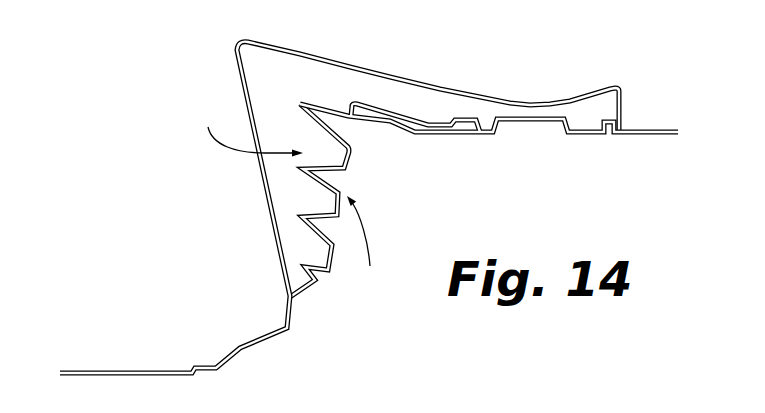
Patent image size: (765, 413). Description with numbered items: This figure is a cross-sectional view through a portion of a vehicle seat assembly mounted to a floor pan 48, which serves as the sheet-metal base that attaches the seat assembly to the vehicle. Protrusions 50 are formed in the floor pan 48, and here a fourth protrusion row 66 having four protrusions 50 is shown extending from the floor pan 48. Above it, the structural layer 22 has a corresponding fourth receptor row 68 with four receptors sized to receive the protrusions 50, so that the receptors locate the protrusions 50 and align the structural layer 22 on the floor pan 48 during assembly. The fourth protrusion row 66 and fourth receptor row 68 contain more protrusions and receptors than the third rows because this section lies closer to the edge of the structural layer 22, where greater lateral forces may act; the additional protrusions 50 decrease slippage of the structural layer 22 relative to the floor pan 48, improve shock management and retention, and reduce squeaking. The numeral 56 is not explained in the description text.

The structural layer 22 is at (412, 84).
The floor pan 48 is at (452, 134).
The protrusions 50 is at (335, 128).
The gaps between fins 56 is at (322, 167).
The fourth protrusion row 66 is at (365, 243).
The fourth receptor row 68 is at (250, 130).